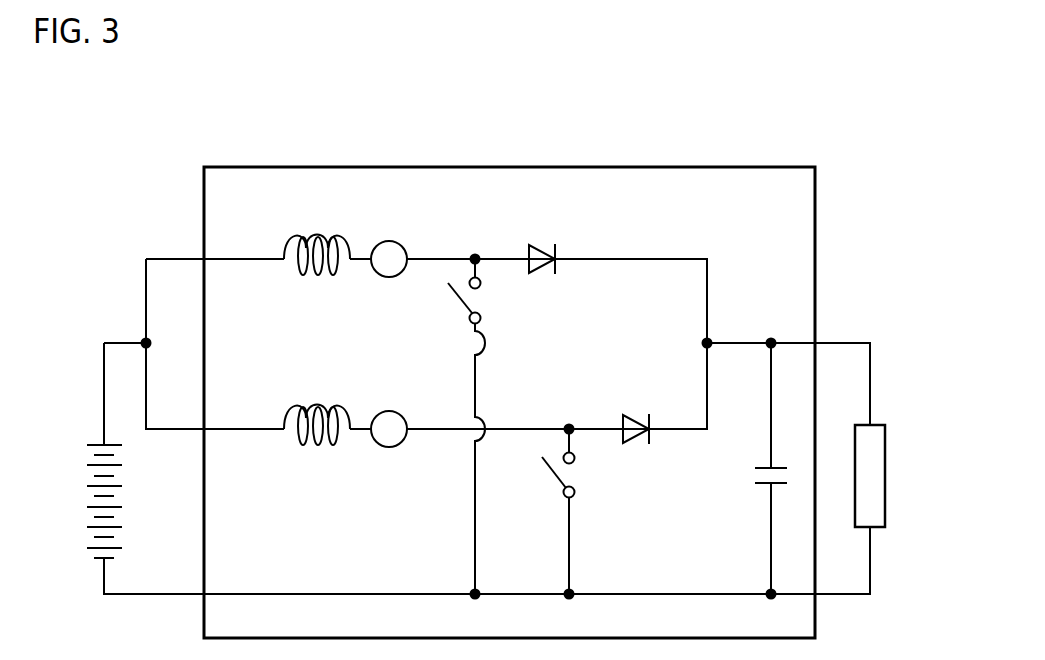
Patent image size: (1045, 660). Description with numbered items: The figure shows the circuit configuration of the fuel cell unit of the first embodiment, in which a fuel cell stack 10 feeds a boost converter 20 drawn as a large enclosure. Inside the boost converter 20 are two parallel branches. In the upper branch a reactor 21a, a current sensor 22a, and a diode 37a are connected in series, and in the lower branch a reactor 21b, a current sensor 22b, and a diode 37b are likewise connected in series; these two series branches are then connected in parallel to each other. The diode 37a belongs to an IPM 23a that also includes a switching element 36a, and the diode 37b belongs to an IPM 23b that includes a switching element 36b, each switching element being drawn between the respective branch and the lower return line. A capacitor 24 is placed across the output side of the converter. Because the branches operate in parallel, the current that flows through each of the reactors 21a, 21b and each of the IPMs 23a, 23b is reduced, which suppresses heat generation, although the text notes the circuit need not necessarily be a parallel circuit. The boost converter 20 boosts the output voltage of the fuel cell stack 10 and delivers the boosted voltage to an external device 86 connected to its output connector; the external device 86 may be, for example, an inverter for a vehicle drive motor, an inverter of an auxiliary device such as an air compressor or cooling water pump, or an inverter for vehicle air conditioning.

The fuel cell stack 10 is at (87, 497).
The boost converter 20 is at (751, 167).
The reactor 21a is at (312, 237).
The current sensor 22a is at (389, 241).
The reactor 21b is at (312, 409).
The current sensor 22b is at (389, 411).
The IPM 23a is at (517, 419).
The switching element 36a is at (473, 298).
The diode 37a is at (557, 282).
The IPM 23b is at (612, 504).
The switching element 36b is at (568, 473).
The diode 37b is at (650, 453).
The capacitor 24 is at (755, 478).
The external device 86 is at (886, 477).